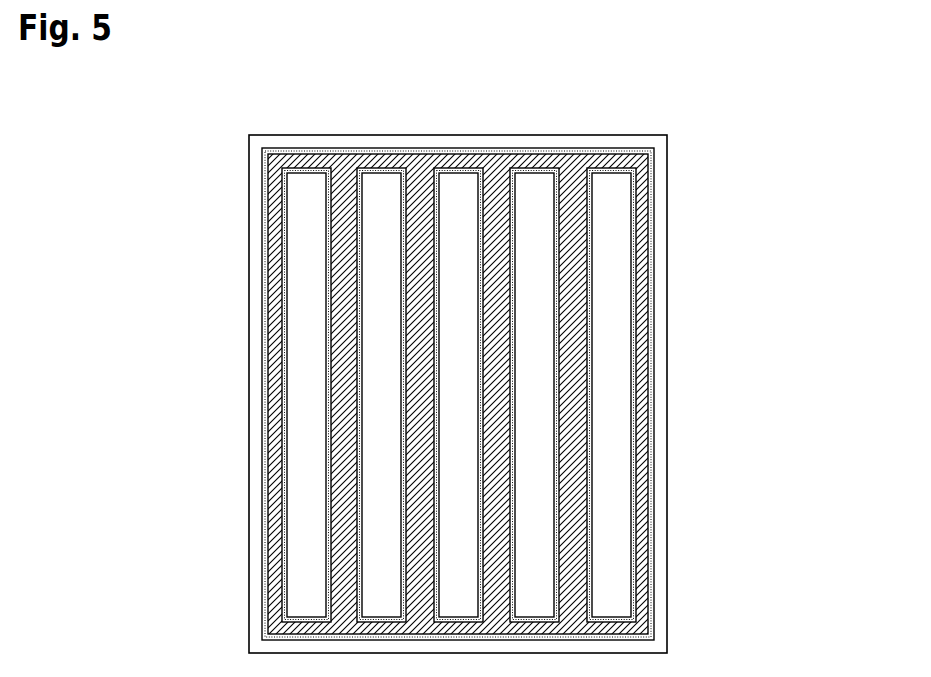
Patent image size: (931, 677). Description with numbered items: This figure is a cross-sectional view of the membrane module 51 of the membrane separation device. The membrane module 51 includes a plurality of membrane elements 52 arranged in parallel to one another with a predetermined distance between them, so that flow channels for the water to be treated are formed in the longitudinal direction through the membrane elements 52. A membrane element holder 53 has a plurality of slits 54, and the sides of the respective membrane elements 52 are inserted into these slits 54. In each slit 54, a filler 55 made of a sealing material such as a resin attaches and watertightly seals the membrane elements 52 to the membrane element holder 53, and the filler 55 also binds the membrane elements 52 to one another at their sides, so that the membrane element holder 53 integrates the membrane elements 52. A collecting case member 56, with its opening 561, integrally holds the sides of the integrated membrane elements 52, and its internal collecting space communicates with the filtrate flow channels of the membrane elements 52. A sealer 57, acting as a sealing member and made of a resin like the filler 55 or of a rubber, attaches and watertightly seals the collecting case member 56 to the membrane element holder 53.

The membrane module 51 is at (460, 119).
The membrane element 52 is at (618, 278).
The membrane element holder 53 is at (652, 374).
The slit 54 is at (632, 190).
The filler 55 is at (652, 324).
The collecting case member 56 is at (553, 135).
The opening 561 is at (297, 175).
The sealer 57 is at (652, 427).